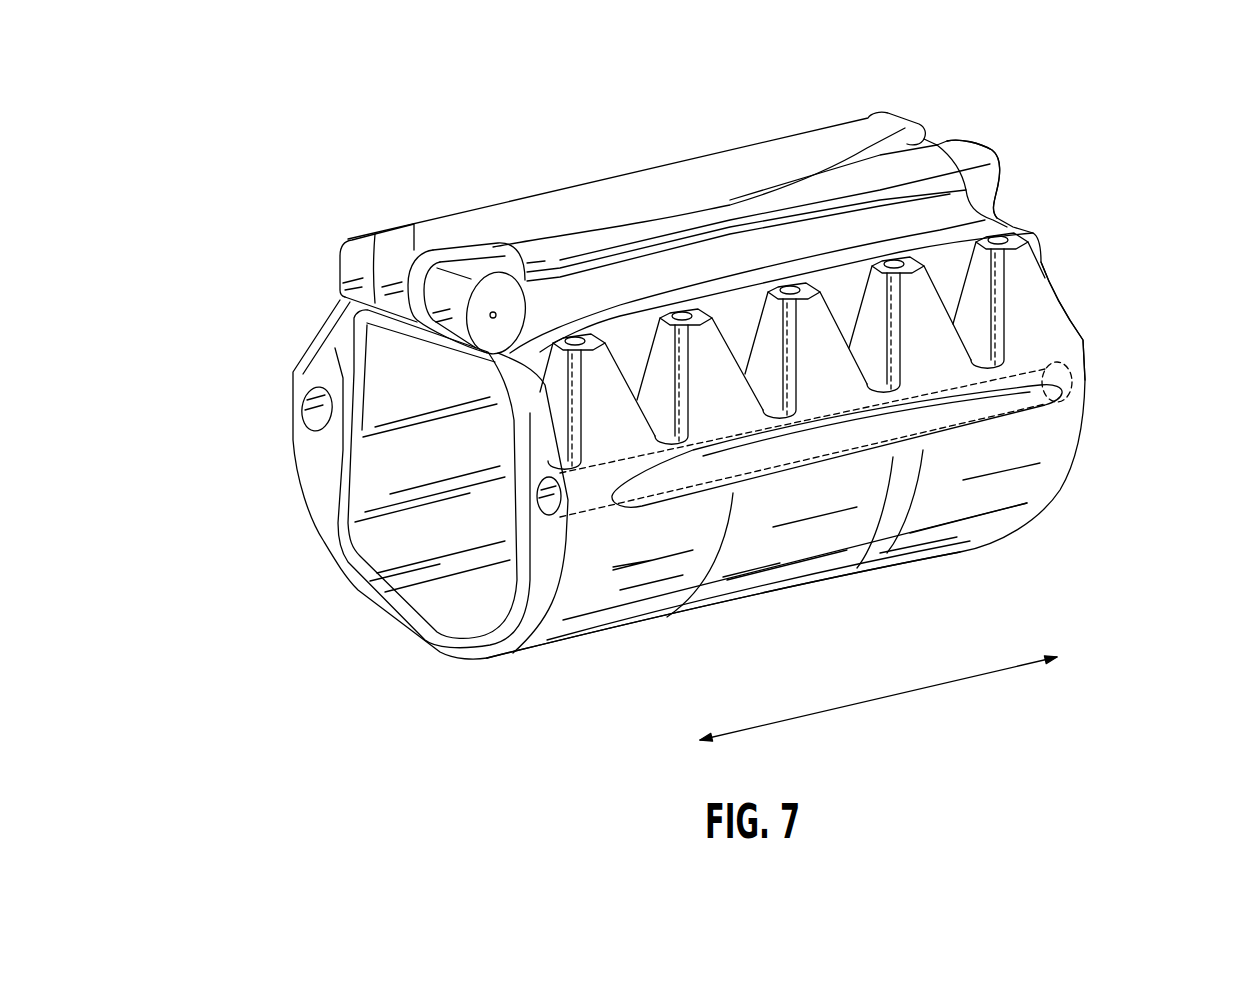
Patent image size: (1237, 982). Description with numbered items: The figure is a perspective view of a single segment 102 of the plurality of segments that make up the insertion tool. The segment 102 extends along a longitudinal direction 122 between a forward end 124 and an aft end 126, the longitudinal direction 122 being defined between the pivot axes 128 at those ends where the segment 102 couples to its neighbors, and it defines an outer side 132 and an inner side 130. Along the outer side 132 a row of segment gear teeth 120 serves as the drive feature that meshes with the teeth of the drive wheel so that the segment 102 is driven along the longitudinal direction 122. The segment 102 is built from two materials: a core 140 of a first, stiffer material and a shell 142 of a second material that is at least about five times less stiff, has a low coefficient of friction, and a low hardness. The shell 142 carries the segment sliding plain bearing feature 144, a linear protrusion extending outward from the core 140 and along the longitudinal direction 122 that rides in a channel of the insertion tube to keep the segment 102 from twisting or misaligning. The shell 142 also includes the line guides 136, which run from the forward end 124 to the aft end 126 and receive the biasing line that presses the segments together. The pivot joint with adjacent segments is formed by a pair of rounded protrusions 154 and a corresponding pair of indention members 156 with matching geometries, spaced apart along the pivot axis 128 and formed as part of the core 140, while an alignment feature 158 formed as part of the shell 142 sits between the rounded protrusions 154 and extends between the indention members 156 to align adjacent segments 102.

The segment 102 is at (397, 106).
The segment gear teeth 120 is at (812, 330).
The longitudinal direction 122 is at (867, 700).
The forward end 124 is at (1128, 378).
The aft end 126 is at (302, 571).
The pivot axis 128 is at (494, 312).
The inner side 130 is at (689, 670).
The outer side 132 is at (709, 106).
The line guide 136 is at (295, 404).
The core 140 is at (380, 550).
The shell 142 is at (1037, 550).
The segment sliding plain bearing feature 144 is at (917, 427).
The rounded protrusions 154 is at (352, 263).
The indention members 156 is at (995, 160).
The alignment feature 158 is at (398, 267).